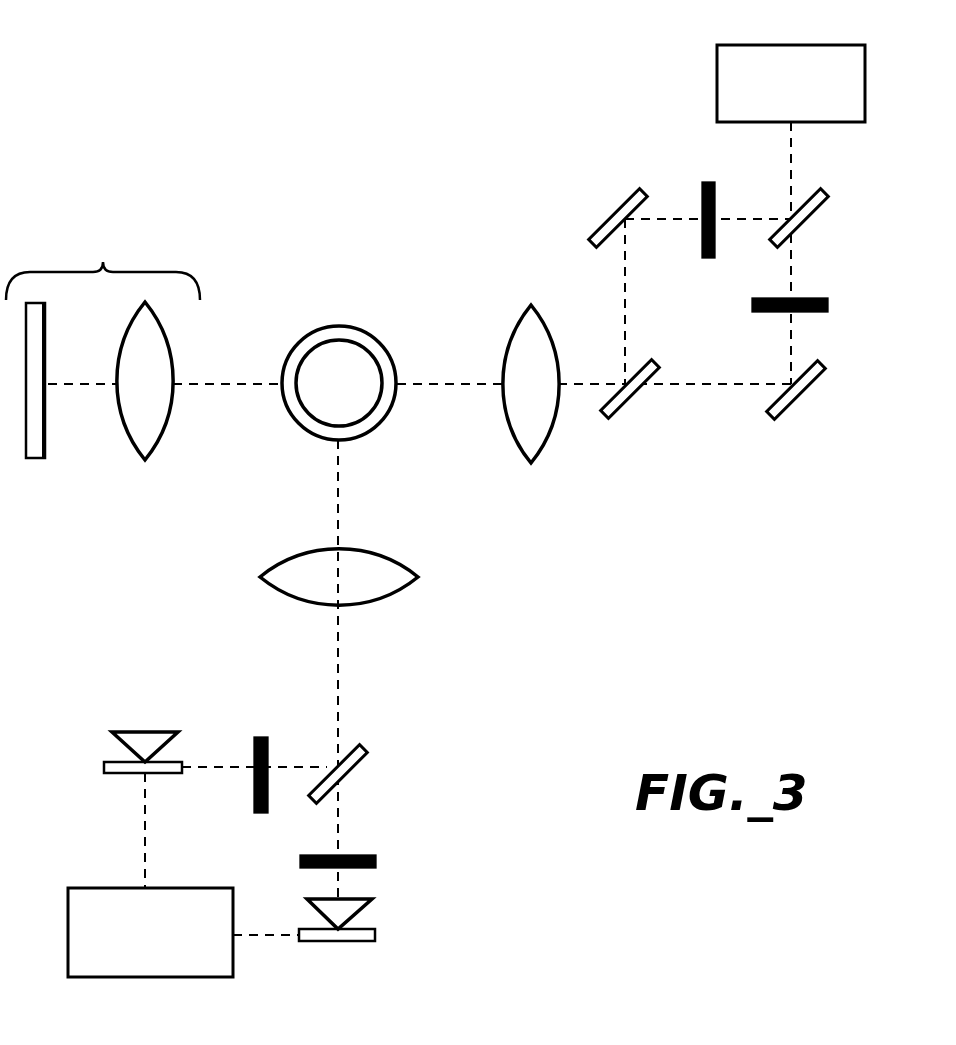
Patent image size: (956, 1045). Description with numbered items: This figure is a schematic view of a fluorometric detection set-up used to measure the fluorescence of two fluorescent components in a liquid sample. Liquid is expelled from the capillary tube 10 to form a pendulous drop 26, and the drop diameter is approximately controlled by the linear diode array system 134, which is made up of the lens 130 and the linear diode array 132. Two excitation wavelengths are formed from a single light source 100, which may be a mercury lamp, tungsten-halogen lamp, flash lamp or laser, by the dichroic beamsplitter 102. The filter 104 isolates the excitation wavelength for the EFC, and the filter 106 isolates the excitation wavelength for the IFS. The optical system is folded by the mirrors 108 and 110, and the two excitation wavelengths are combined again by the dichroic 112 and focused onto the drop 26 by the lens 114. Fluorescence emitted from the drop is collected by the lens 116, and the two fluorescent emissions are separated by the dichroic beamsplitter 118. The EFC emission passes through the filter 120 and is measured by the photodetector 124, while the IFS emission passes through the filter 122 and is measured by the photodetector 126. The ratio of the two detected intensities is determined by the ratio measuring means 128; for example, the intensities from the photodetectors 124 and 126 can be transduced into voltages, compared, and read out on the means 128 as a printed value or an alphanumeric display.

The capillary tube 10 is at (373, 347).
The pendulous drop 26 is at (338, 357).
The light source 100 is at (740, 45).
The dichroic beamsplitter 102 is at (800, 228).
The filter 104 is at (706, 182).
The filter 106 is at (795, 312).
The mirror 108 is at (628, 205).
The mirror 110 is at (790, 410).
The dichroic 112 is at (623, 410).
The lens 114 is at (550, 440).
The lens 116 is at (395, 560).
The dichroic beamsplitter 118 is at (362, 748).
The filter 120 is at (360, 855).
The filter 122 is at (262, 737).
The photodetector 124 is at (362, 928).
The photodetector 126 is at (160, 732).
The ratio measuring means 128 is at (118, 888).
The lens 130 is at (160, 445).
The linear diode array 132 is at (36, 458).
The linear diode array system 134 is at (103, 262).